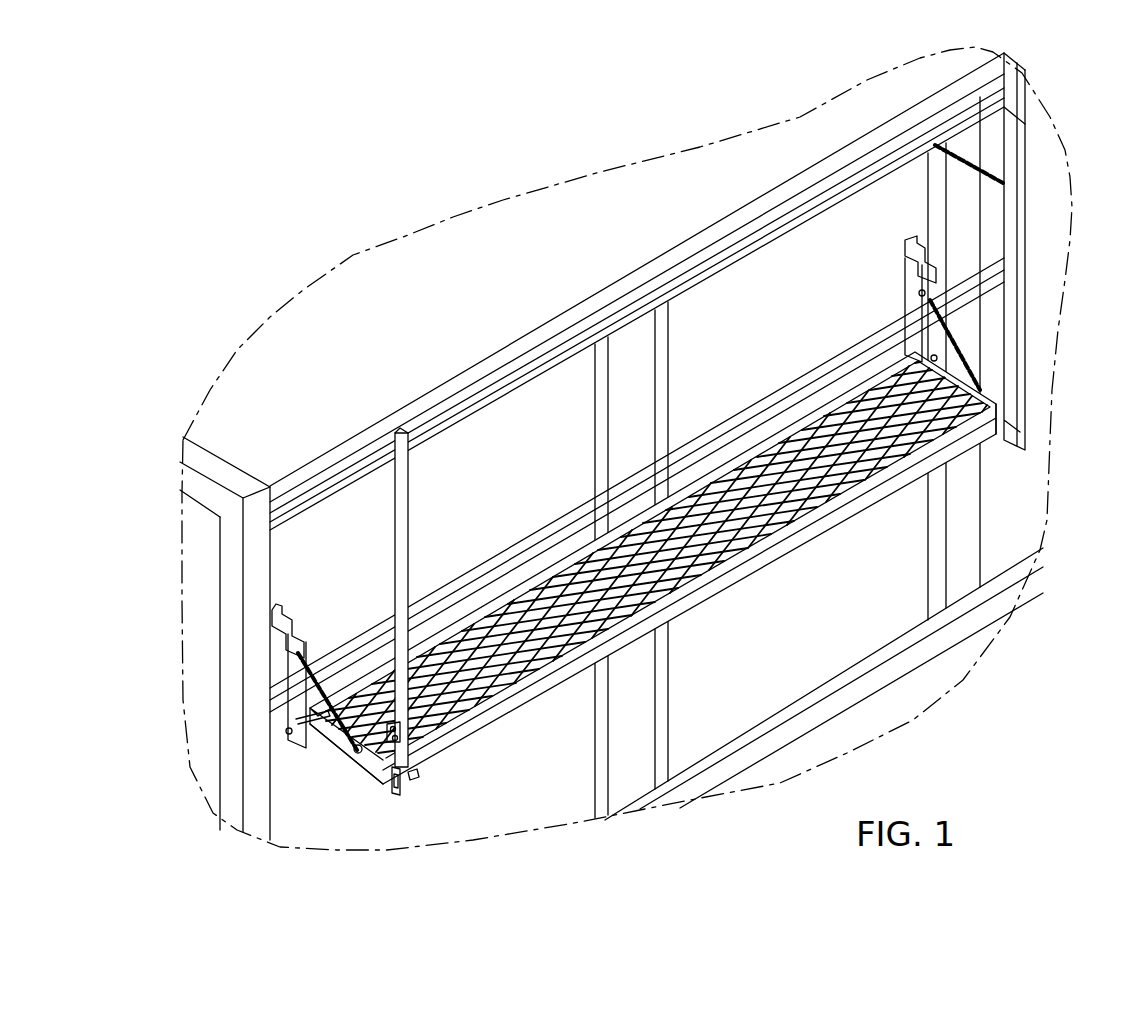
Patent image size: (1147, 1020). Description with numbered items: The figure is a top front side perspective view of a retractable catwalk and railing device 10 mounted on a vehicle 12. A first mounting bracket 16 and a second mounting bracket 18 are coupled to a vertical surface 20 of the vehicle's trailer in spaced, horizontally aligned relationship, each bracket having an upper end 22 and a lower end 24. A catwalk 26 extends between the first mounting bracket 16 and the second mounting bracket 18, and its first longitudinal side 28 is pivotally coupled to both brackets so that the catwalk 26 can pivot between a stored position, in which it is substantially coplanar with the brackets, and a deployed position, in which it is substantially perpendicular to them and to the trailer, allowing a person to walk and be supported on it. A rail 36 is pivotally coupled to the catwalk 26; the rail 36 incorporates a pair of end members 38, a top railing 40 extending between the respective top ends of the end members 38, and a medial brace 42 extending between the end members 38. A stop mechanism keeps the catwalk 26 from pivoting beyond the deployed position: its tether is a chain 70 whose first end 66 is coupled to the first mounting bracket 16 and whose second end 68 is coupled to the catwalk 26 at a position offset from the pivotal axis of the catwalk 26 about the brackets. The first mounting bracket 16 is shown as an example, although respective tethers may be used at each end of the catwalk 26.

The retractable catwalk and railing device 10 is at (713, 568).
The vehicle 12 is at (475, 268).
The first mounting bracket 16 is at (285, 660).
The second mounting bracket 18 is at (968, 277).
The vertical surface 20 is at (806, 267).
The upper end 22 is at (619, 478).
The lower end 24 is at (280, 737).
The catwalk 26 is at (757, 533).
The first longitudinal side 28 is at (393, 648).
The rail 36 is at (507, 532).
The end members 38 is at (1017, 205).
The top railing 40 is at (650, 290).
The medial brace 42 is at (745, 385).
The first end 66 is at (320, 636).
The second end 68 is at (356, 755).
The chain 70 is at (378, 665).